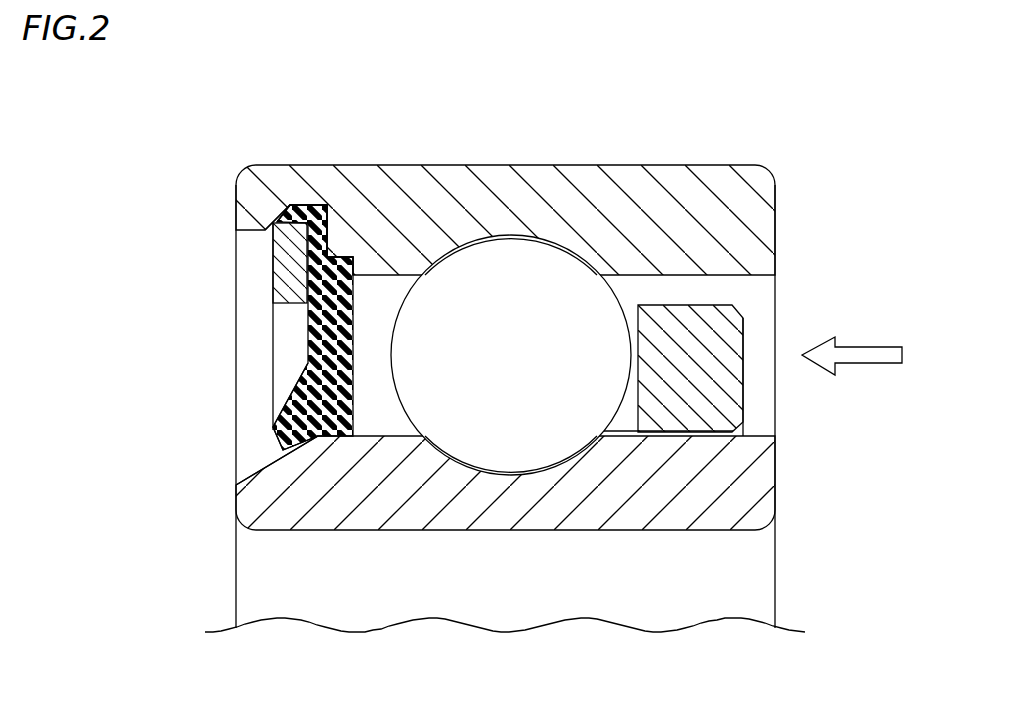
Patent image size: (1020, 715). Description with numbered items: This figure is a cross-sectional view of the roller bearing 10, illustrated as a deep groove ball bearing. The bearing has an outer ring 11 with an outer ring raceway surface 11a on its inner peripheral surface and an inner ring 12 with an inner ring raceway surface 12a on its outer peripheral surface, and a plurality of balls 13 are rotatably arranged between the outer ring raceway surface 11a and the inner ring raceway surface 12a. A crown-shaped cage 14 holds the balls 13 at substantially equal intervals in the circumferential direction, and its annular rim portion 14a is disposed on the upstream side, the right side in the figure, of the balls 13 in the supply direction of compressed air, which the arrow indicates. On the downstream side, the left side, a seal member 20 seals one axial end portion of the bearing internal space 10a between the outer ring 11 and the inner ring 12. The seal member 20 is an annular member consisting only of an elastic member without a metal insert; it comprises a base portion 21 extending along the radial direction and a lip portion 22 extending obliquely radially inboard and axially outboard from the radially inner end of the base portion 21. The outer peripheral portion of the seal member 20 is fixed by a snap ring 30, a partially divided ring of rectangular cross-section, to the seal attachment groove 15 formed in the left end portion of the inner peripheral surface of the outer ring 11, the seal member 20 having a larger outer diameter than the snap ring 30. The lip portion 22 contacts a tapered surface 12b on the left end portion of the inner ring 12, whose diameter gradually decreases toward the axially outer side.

The roller bearing 10 is at (772, 142).
The bearing internal space 10a is at (376, 392).
The outer ring 11 is at (668, 217).
The outer ring raceway surface 11a is at (520, 250).
The inner ring 12 is at (663, 488).
The inner ring raceway surface 12a is at (497, 472).
The tapered surface 12b is at (266, 470).
The balls 13 is at (545, 432).
The cage 14 is at (747, 309).
The annular rim portion 14a is at (722, 407).
The seal attachment groove 15 is at (326, 230).
The seal member 20 is at (296, 328).
The base portion 21 is at (308, 273).
The lip portion 22 is at (303, 418).
The snap ring 30 is at (330, 280).